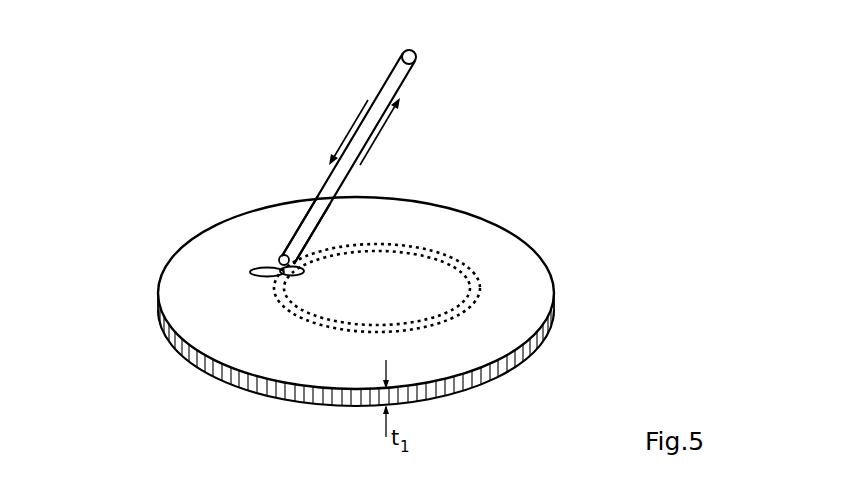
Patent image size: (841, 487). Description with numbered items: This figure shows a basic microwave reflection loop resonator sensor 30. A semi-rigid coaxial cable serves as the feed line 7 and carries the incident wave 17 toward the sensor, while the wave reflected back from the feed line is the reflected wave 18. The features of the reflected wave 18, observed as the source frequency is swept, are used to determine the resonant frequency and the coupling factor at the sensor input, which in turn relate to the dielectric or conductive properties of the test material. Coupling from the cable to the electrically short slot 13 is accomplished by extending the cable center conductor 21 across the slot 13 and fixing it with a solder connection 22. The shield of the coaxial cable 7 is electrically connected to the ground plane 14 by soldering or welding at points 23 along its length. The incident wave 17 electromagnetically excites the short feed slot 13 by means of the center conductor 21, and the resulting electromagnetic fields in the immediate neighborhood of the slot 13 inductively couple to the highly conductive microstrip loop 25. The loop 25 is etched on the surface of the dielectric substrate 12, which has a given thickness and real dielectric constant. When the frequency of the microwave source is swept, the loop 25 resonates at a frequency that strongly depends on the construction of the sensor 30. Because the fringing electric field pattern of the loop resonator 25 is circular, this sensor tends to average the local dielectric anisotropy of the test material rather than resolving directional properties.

The coaxial cable feed line 7 is at (396, 90).
The dielectric substrate 12 is at (528, 350).
The short slot 13 is at (275, 267).
The ground plane 14 is at (460, 242).
The incident wave 17 is at (339, 132).
The reflected wave 18 is at (381, 131).
The cable center conductor 21 is at (281, 258).
The solder connection 22 is at (273, 277).
The soldering or welding points 23 is at (313, 227).
The loop resonator 25 is at (480, 287).
The sensor 30 is at (160, 322).